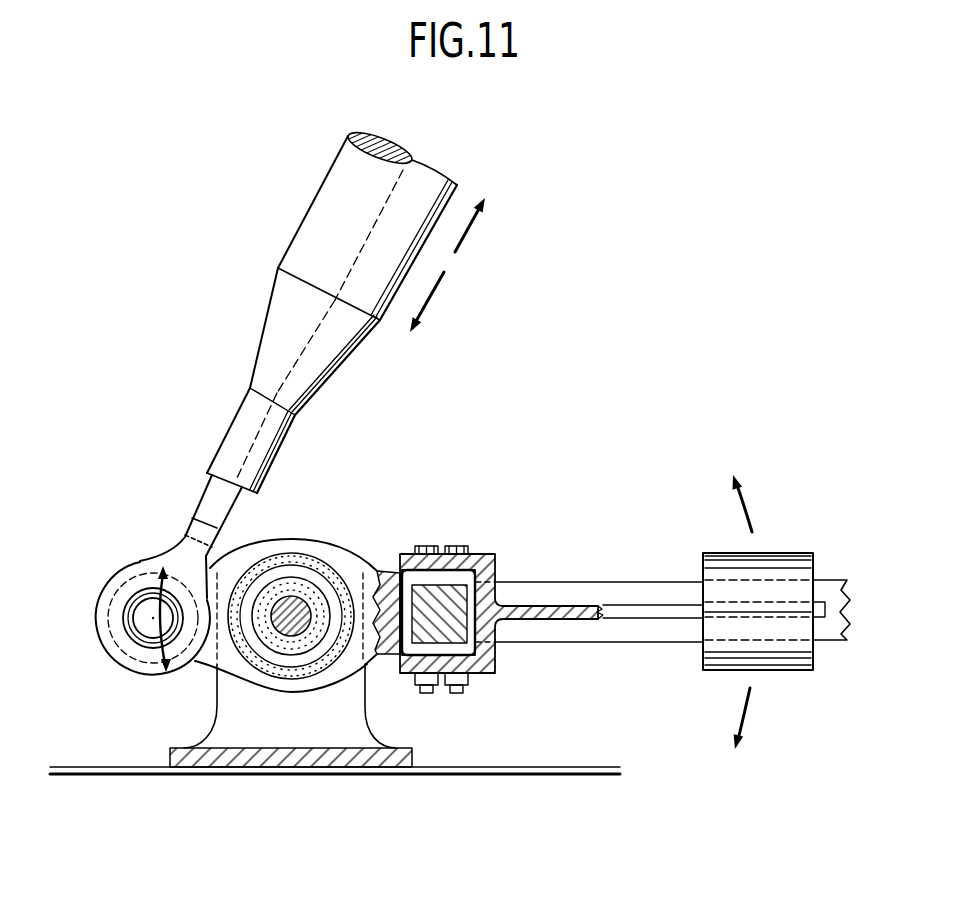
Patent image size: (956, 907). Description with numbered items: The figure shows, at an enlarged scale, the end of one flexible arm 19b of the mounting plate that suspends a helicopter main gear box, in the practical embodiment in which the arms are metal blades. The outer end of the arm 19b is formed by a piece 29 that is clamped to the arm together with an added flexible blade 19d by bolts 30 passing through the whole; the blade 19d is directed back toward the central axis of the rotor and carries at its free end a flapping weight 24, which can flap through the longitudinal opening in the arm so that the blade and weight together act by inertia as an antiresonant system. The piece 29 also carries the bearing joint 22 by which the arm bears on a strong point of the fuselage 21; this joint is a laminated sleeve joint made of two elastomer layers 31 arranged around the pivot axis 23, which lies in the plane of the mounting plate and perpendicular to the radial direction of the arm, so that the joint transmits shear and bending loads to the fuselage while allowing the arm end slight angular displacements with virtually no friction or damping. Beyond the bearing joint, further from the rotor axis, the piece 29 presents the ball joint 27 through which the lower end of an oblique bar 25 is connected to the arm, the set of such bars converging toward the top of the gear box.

The flexible arm 19b is at (658, 632).
The inner extension 19d is at (595, 607).
The fuselage 21 is at (527, 767).
The bearing joint 22 is at (326, 538).
The pivot pin 23 is at (285, 600).
The flapping weight 24 is at (775, 565).
The oblique bar 25 is at (320, 230).
The ball joint 27 is at (122, 556).
The end piece 29 is at (365, 577).
The bolts 30 is at (455, 545).
The elastomer layers 31 is at (277, 645).